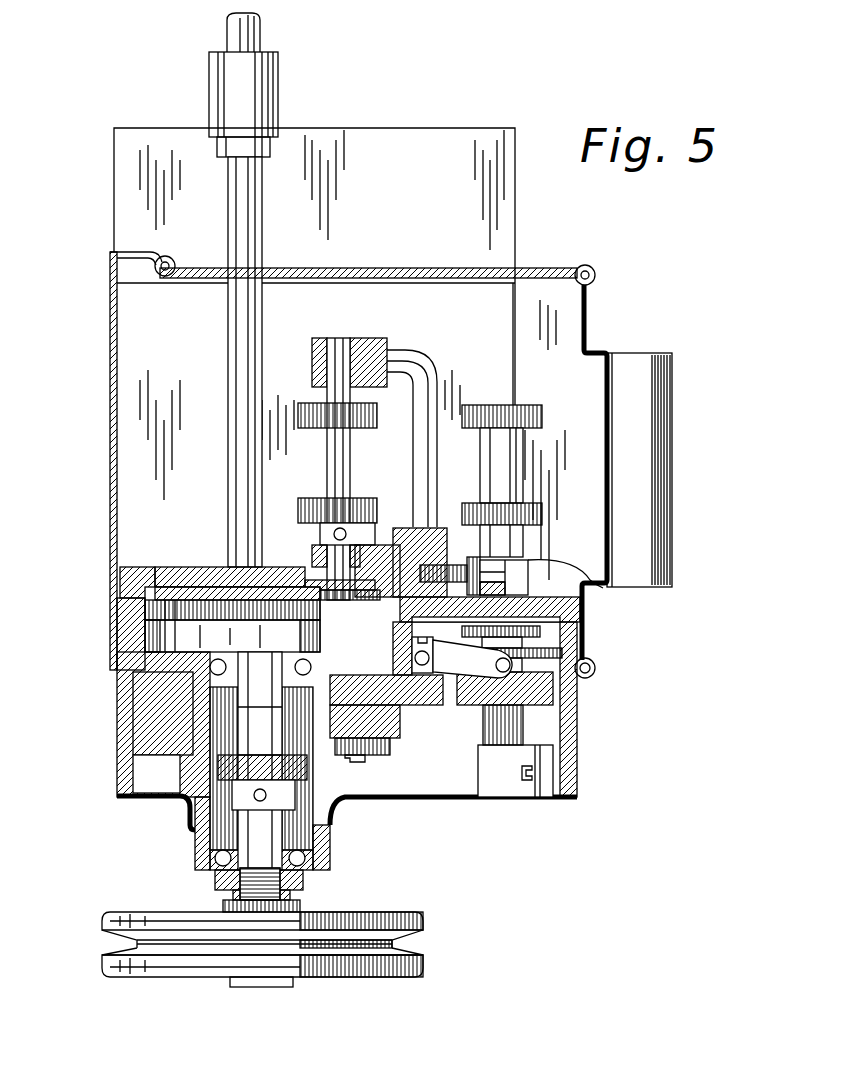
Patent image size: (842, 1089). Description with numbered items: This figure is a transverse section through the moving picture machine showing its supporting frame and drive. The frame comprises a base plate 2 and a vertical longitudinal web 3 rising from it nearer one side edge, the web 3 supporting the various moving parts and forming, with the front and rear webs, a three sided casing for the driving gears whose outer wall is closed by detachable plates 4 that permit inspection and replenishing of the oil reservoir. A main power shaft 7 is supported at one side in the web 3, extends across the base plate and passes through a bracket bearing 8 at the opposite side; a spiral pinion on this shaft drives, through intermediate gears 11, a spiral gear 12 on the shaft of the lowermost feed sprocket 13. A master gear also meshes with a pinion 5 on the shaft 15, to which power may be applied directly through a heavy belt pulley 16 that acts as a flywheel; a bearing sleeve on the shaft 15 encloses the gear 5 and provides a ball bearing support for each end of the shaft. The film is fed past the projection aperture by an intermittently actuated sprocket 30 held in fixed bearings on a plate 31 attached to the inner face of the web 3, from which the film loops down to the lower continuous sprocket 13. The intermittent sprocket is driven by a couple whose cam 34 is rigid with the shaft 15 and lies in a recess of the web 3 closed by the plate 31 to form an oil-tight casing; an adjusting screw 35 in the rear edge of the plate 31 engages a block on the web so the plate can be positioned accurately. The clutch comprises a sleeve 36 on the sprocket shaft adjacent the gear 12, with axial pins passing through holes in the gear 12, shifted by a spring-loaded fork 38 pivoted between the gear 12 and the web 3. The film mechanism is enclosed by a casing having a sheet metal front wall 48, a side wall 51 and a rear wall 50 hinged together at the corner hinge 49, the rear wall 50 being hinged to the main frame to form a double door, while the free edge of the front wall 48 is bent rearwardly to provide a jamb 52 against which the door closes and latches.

The base plate 2 is at (339, 354).
The vertical longitudinal web 3 is at (500, 608).
The detachable plates 4 is at (455, 800).
The pinion 5 is at (308, 770).
The main power shaft 7 is at (262, 243).
The bracket bearing 8 is at (278, 80).
The intermediate gears 11 is at (413, 708).
The spiral gear 12 is at (477, 708).
The lowermost feed sprocket 13 is at (545, 412).
The shaft 15 is at (270, 728).
The belt pulley 16 is at (368, 912).
The intermittently actuated sprocket 30 is at (313, 403).
The plate 31 is at (152, 567).
The cam 34 is at (168, 640).
The adjusting screw 35 is at (603, 588).
The sleeve 36 is at (590, 680).
The fork 38 is at (455, 668).
The sheet metal front wall 48 is at (110, 492).
The hinge 49 is at (594, 270).
The rear wall 50 is at (590, 322).
The side wall 51 is at (388, 268).
The jamb 52 is at (118, 252).